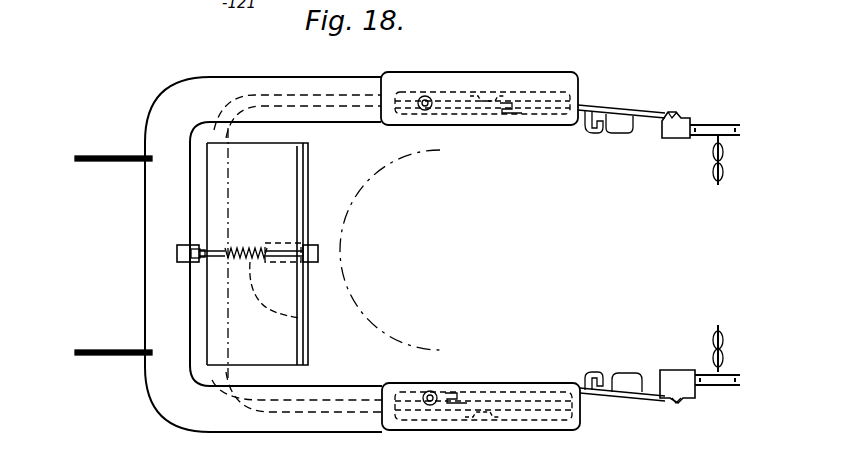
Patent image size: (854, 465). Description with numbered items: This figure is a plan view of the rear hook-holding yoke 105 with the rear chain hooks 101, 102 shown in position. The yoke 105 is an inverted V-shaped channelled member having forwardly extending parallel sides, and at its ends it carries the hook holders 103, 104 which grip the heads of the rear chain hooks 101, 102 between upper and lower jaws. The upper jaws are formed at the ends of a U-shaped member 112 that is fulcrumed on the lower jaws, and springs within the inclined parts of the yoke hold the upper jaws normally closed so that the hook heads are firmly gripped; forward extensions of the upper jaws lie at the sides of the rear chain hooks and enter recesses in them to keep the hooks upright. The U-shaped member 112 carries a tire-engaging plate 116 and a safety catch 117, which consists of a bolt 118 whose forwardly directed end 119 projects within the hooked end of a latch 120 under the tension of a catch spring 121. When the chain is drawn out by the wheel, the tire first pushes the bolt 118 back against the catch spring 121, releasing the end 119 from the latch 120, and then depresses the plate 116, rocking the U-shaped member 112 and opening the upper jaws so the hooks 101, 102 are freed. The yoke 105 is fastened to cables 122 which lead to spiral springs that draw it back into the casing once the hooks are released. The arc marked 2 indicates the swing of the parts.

The swing arc of actuator 2 is at (392, 342).
The rear chain hook 101 is at (676, 370).
The rear chain hook 102 is at (680, 118).
The hook holder 103 is at (476, 428).
The hook holder 104 is at (490, 72).
The rear hook-holding yoke 105 is at (150, 257).
The U-shaped member 112 is at (286, 253).
The tire-engaging plate 116 is at (305, 223).
The safety catch 117 is at (302, 244).
The bolt 118 is at (318, 256).
The forwardly directed end 119 is at (202, 262).
The latch 120 is at (195, 246).
The catch spring 121 is at (300, 318).
The cable 122 is at (97, 163).